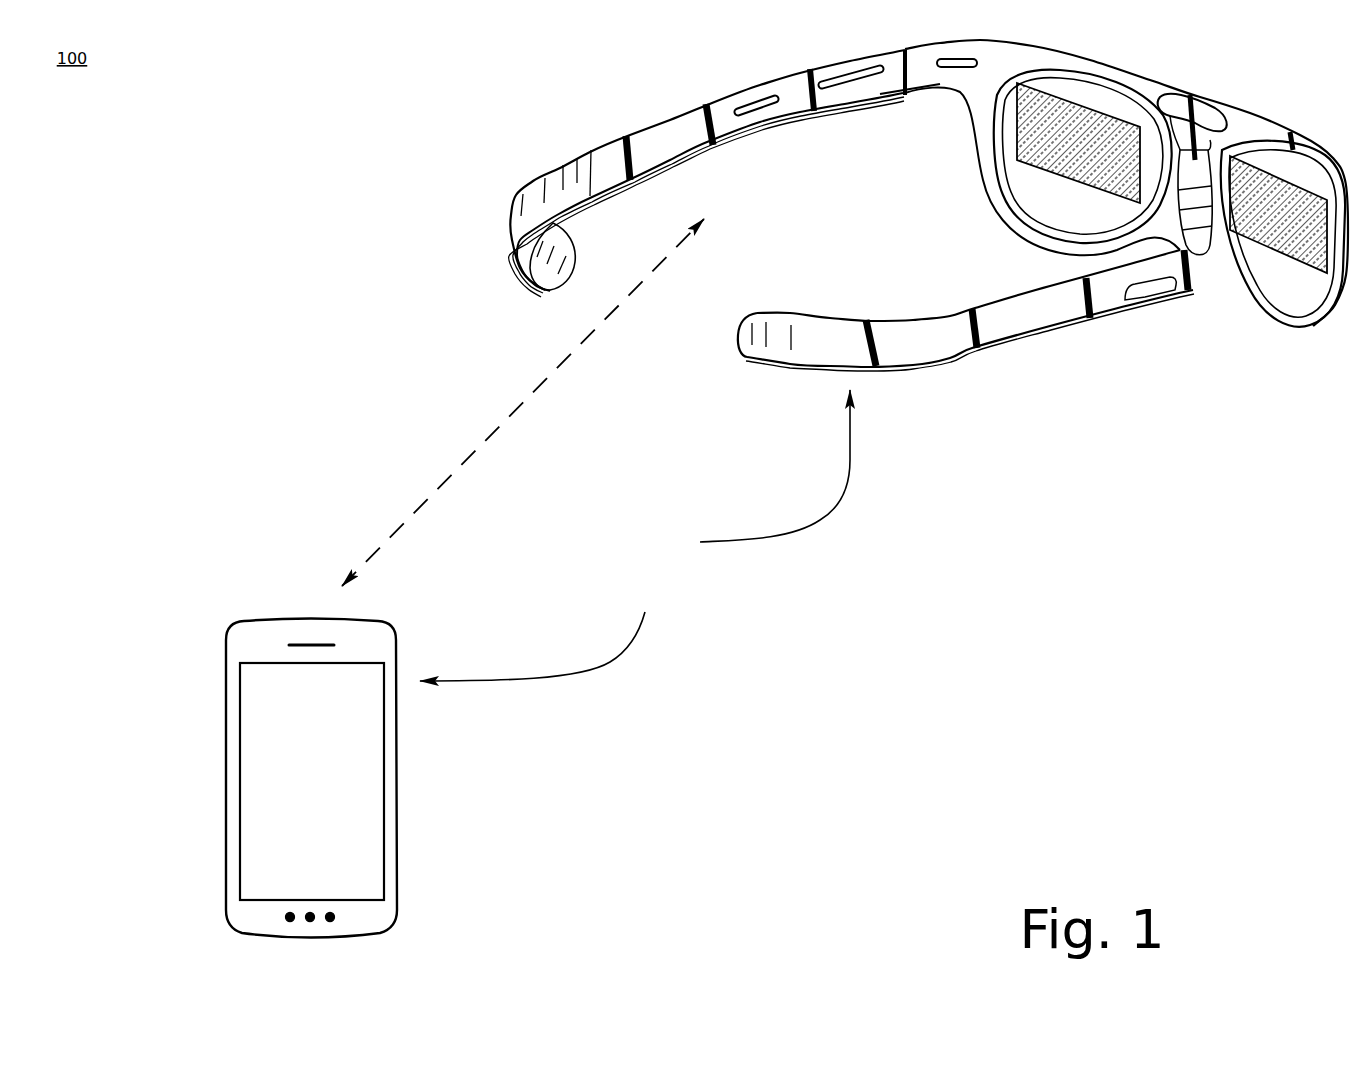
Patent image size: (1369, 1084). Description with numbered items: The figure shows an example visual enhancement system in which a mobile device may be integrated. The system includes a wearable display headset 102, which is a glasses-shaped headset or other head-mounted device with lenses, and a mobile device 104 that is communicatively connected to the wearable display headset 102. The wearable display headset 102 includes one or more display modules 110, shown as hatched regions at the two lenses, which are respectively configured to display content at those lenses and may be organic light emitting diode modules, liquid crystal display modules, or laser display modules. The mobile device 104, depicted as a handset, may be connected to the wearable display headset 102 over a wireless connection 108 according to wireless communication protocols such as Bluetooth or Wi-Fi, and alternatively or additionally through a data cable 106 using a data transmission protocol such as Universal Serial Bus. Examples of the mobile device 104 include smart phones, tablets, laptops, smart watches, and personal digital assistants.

The wearable display headset 102 is at (630, 137).
The mobile device 104 is at (397, 870).
The data cable 106 is at (635, 535).
The wireless connection 108 is at (523, 402).
The display modules 110 is at (1091, 187).